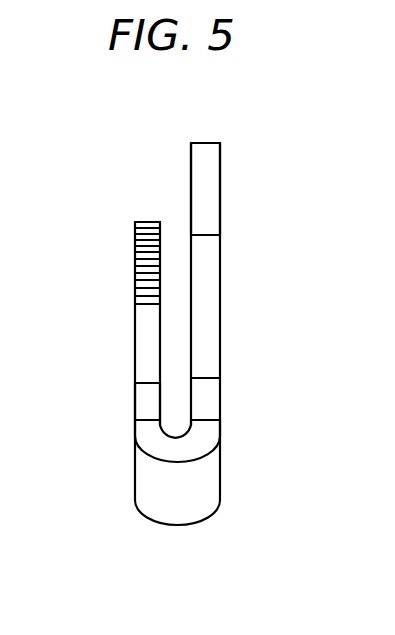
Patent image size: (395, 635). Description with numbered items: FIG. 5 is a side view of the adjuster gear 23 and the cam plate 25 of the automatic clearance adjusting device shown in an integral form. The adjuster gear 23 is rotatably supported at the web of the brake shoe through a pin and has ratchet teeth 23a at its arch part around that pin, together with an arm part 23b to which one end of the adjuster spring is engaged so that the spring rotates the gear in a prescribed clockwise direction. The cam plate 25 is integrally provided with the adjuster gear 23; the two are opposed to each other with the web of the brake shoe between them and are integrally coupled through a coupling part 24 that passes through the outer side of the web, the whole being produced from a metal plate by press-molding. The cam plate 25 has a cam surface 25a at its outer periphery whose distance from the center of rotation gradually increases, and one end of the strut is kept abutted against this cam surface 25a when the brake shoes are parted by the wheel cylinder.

The adjuster gear 23 is at (134, 350).
The ratchet teeth 23a is at (148, 221).
The arm part 23b is at (140, 403).
The coupling part 24 is at (170, 490).
The cam plate 25 is at (220, 312).
The cam surface 25a is at (209, 188).